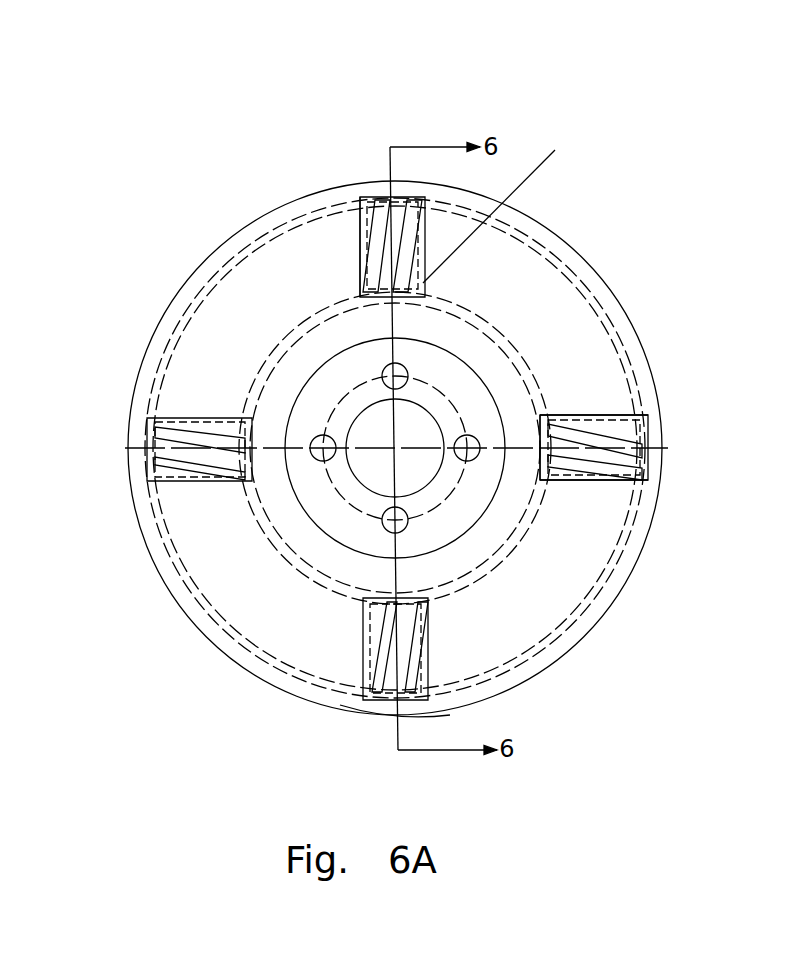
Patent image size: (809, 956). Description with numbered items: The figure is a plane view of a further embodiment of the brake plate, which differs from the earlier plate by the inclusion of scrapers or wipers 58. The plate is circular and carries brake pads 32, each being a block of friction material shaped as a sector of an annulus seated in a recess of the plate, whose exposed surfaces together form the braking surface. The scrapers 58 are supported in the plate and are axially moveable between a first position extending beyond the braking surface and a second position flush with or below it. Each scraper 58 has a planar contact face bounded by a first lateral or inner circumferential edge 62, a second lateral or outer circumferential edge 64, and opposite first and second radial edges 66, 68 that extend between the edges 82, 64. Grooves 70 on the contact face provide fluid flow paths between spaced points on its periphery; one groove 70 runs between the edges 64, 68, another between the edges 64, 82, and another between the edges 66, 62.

The brake pad 32 is at (235, 330).
The scraper 58 is at (358, 266).
The first lateral edge 62 is at (580, 471).
The second lateral edge 64 is at (373, 190).
The first radial edge 66 is at (627, 482).
The second radial edge 68 is at (367, 278).
The groove 70 is at (403, 222).
The edge 82 is at (368, 712).